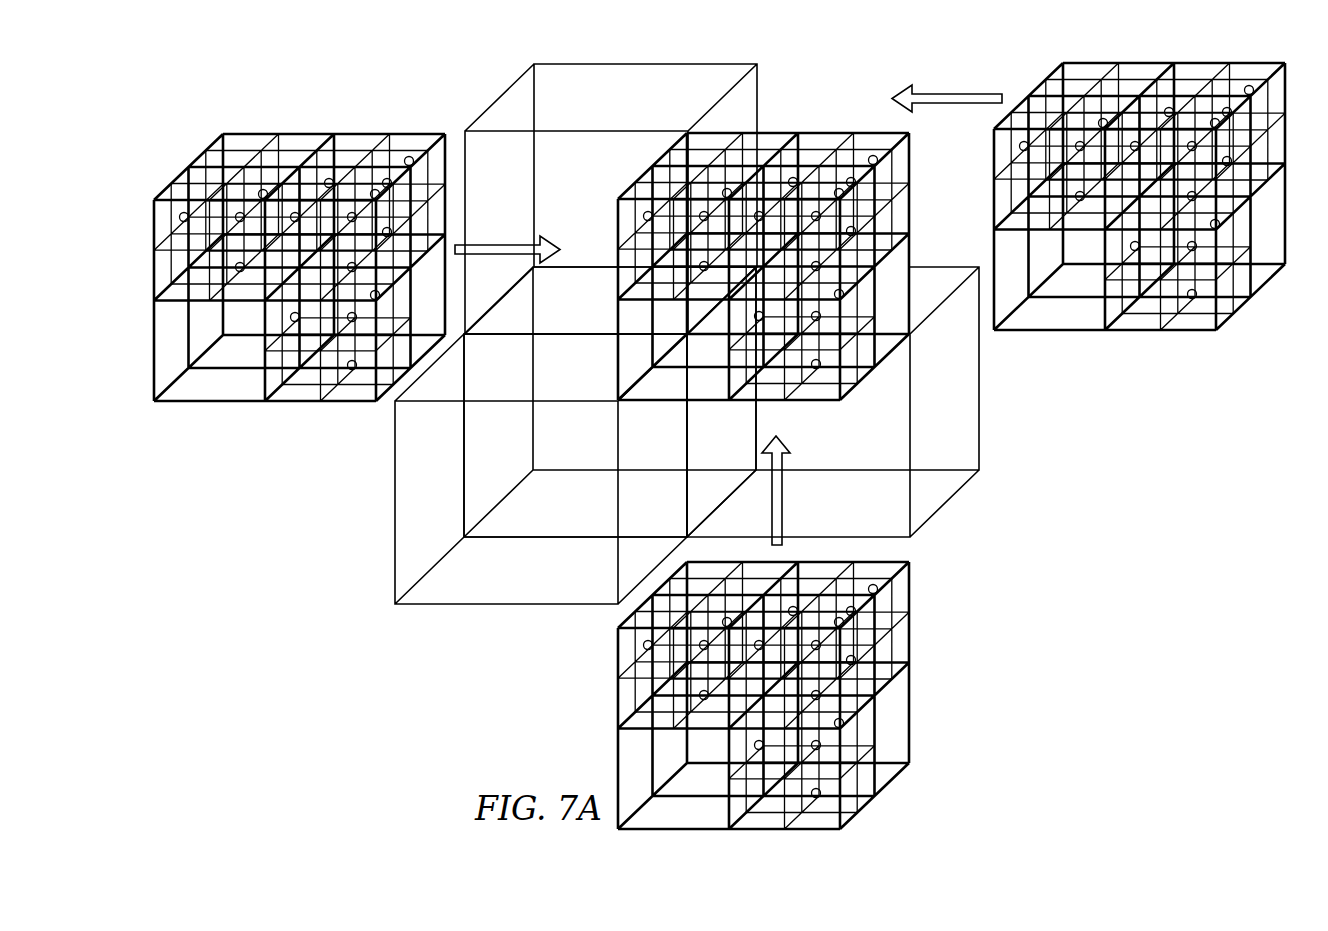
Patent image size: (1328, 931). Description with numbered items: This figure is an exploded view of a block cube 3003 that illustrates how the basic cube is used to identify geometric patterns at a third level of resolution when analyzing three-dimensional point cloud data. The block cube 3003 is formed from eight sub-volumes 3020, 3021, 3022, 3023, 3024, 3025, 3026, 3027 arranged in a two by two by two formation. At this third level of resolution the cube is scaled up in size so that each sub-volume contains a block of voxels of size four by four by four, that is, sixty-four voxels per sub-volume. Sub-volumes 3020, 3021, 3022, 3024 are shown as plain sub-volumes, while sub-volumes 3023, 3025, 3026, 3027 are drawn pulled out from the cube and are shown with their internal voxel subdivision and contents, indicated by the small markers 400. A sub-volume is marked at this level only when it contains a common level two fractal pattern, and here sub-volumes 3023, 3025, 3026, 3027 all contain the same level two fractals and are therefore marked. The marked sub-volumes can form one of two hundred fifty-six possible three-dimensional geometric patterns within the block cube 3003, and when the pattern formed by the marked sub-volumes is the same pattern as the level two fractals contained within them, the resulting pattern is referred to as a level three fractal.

The block cube 3003 is at (691, 425).
The sub-volume 3020 is at (527, 428).
The sub-volume 3021 is at (987, 418).
The sub-volume 3022 is at (387, 534).
The sub-volume 3023 is at (910, 781).
The sub-volume 3024 is at (632, 60).
The sub-volume 3025 is at (1112, 350).
The sub-volume 3026 is at (220, 412).
The sub-volume 3027 is at (808, 118).
The points 400 is at (178, 183).